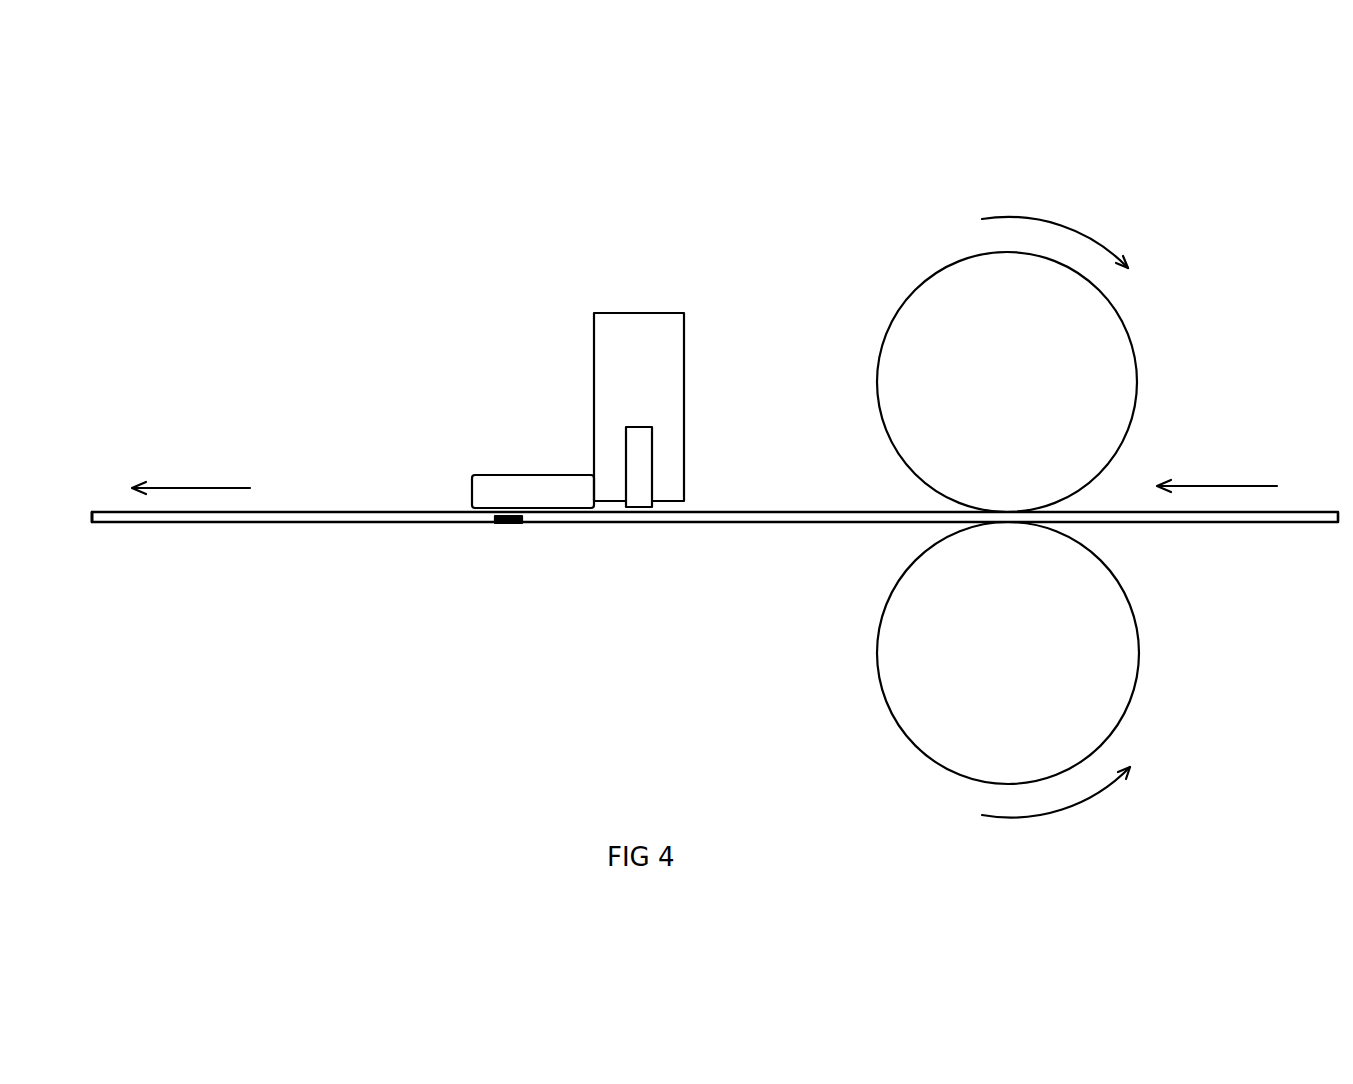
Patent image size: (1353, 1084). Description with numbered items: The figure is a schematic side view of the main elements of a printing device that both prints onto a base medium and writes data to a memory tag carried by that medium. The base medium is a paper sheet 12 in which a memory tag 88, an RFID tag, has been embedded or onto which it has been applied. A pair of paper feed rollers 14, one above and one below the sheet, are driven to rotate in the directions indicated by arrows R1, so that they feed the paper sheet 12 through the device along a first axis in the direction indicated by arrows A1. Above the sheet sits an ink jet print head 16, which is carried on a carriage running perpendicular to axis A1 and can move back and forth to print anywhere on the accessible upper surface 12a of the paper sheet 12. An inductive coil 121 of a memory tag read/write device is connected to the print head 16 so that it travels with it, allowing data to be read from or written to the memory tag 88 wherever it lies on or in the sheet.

The paper sheet 12 is at (752, 540).
The upper surface of the paper sheet 12a is at (196, 524).
The paper feed rollers 14 is at (1138, 378).
The print head 16 is at (675, 370).
The inductive coil 121 is at (535, 475).
The memory tag 88 is at (508, 524).
The arrows indicating roller rotation R1 is at (1093, 238).
The arrows indicating paper feed direction A1 is at (250, 488).